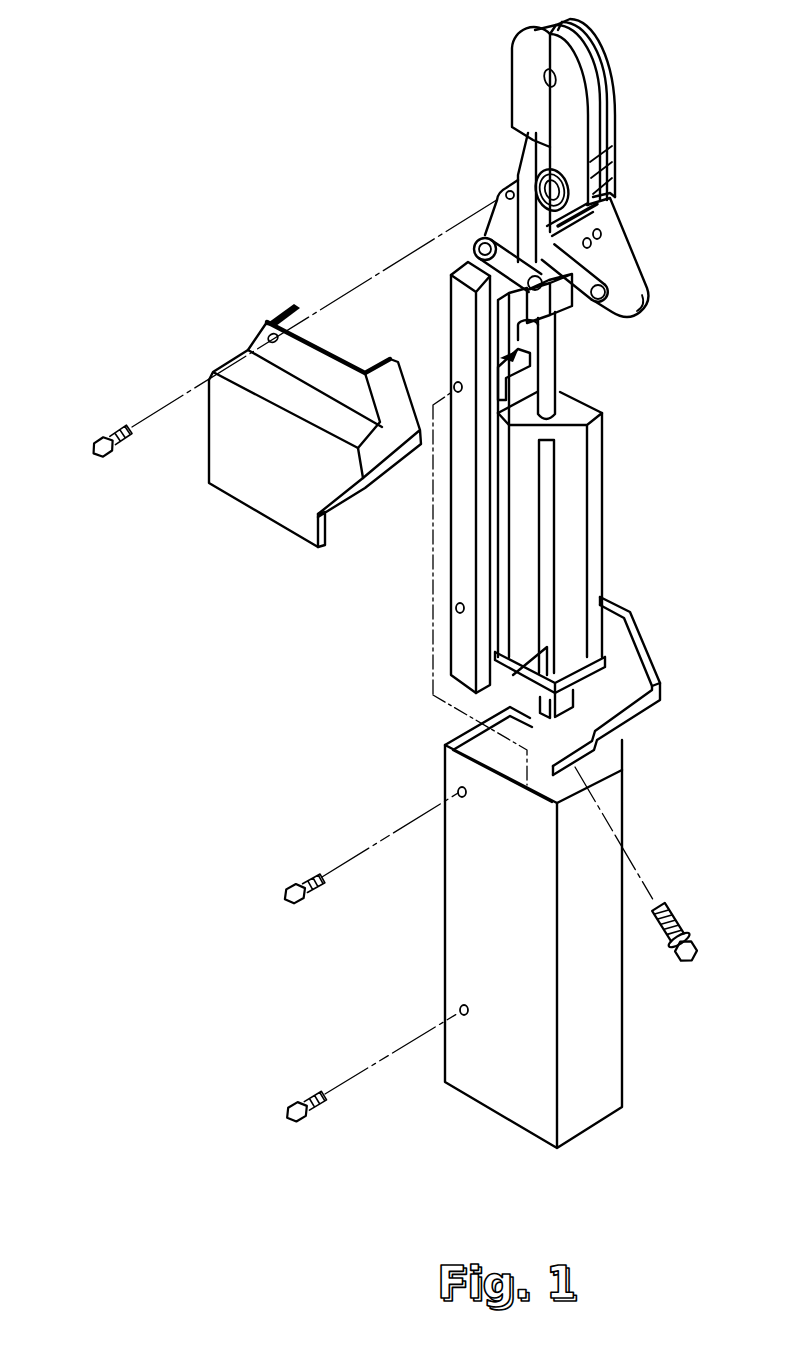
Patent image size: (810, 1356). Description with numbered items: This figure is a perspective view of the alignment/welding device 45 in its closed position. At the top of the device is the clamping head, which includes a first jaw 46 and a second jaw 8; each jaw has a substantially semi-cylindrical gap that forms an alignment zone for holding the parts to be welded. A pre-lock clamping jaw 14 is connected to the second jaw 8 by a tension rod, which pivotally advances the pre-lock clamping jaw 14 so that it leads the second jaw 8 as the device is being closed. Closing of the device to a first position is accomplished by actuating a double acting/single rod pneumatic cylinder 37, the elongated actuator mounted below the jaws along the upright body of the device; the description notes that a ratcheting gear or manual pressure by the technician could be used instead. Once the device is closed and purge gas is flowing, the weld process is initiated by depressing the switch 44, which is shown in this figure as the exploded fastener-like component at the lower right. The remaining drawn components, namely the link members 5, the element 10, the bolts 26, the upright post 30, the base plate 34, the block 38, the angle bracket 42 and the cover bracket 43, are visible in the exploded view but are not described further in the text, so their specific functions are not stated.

The links 5 is at (551, 247).
The second jaw 8 is at (594, 135).
The intermediate plate 10 is at (597, 111).
The pre-lock clamping jaw 14 is at (584, 98).
The bolts 26 is at (271, 661).
The post 30 is at (448, 477).
The base plate 34 is at (564, 682).
The double acting/single rod pneumatic cylinder 37 is at (571, 480).
The block 38 is at (560, 321).
The angle bracket 42 is at (630, 686).
The cover bracket 43 is at (315, 425).
The switch 44 is at (654, 867).
The alignment/welding device 45 is at (488, 176).
The first jaw 46 is at (515, 82).